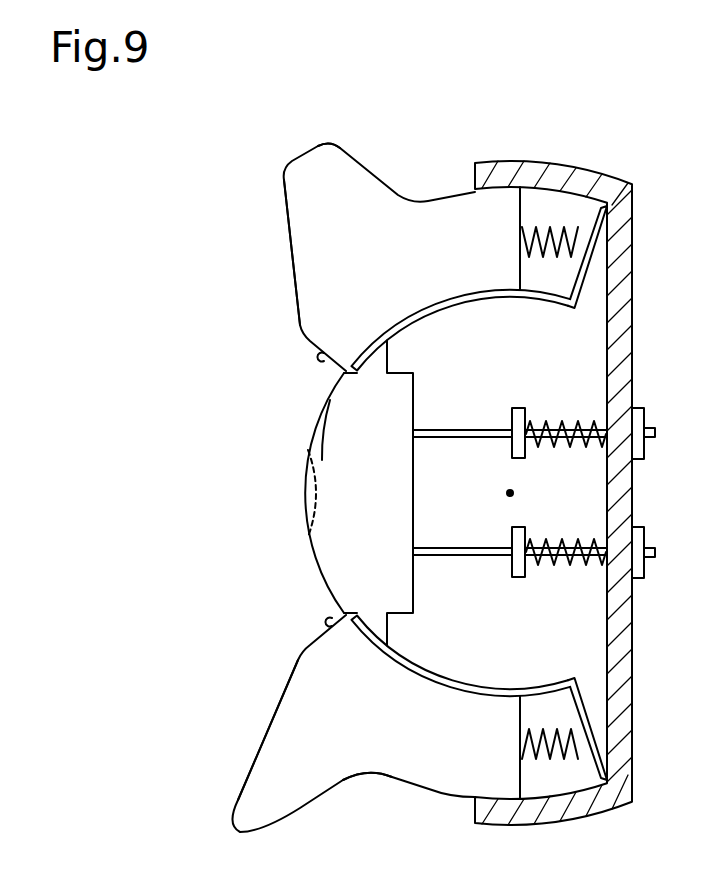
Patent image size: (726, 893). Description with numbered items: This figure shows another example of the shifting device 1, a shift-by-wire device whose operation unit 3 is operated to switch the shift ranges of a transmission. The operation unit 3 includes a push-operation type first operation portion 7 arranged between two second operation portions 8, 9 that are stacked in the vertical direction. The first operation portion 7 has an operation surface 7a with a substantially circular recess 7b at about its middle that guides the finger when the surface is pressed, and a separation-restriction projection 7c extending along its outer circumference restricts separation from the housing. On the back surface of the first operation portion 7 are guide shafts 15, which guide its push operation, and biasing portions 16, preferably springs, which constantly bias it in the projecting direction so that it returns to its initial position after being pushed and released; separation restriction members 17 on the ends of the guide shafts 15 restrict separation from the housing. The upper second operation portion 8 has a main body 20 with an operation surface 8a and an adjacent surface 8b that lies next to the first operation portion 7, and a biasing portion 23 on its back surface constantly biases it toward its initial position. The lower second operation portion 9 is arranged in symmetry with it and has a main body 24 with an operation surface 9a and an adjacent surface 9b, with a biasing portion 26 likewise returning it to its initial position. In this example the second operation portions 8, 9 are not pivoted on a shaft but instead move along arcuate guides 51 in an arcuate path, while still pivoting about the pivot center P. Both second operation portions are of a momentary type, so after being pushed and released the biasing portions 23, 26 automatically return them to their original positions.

The shifting device 1 is at (258, 112).
The operation unit 3 is at (344, 486).
The first operation portion 7 is at (327, 399).
The operation surface 7a is at (314, 430).
The recess 7b is at (304, 493).
The separation-restriction projection 7c is at (378, 358).
The second operation portion 8 is at (365, 168).
The operation surface 8a is at (293, 270).
The adjacent surface 8b is at (328, 355).
The second operation portion 9 is at (304, 810).
The operation surface 9a is at (278, 705).
The adjacent surface 9b is at (334, 626).
The guide shaft 15 is at (452, 429).
The biasing portion 16 is at (566, 420).
The separation restriction member 17 is at (649, 416).
The main body 20 is at (313, 165).
The biasing portion 23 is at (562, 240).
The main body 24 is at (372, 775).
The biasing portion 26 is at (556, 760).
The arcuate guide 51 is at (464, 305).
The pivot center P is at (506, 494).